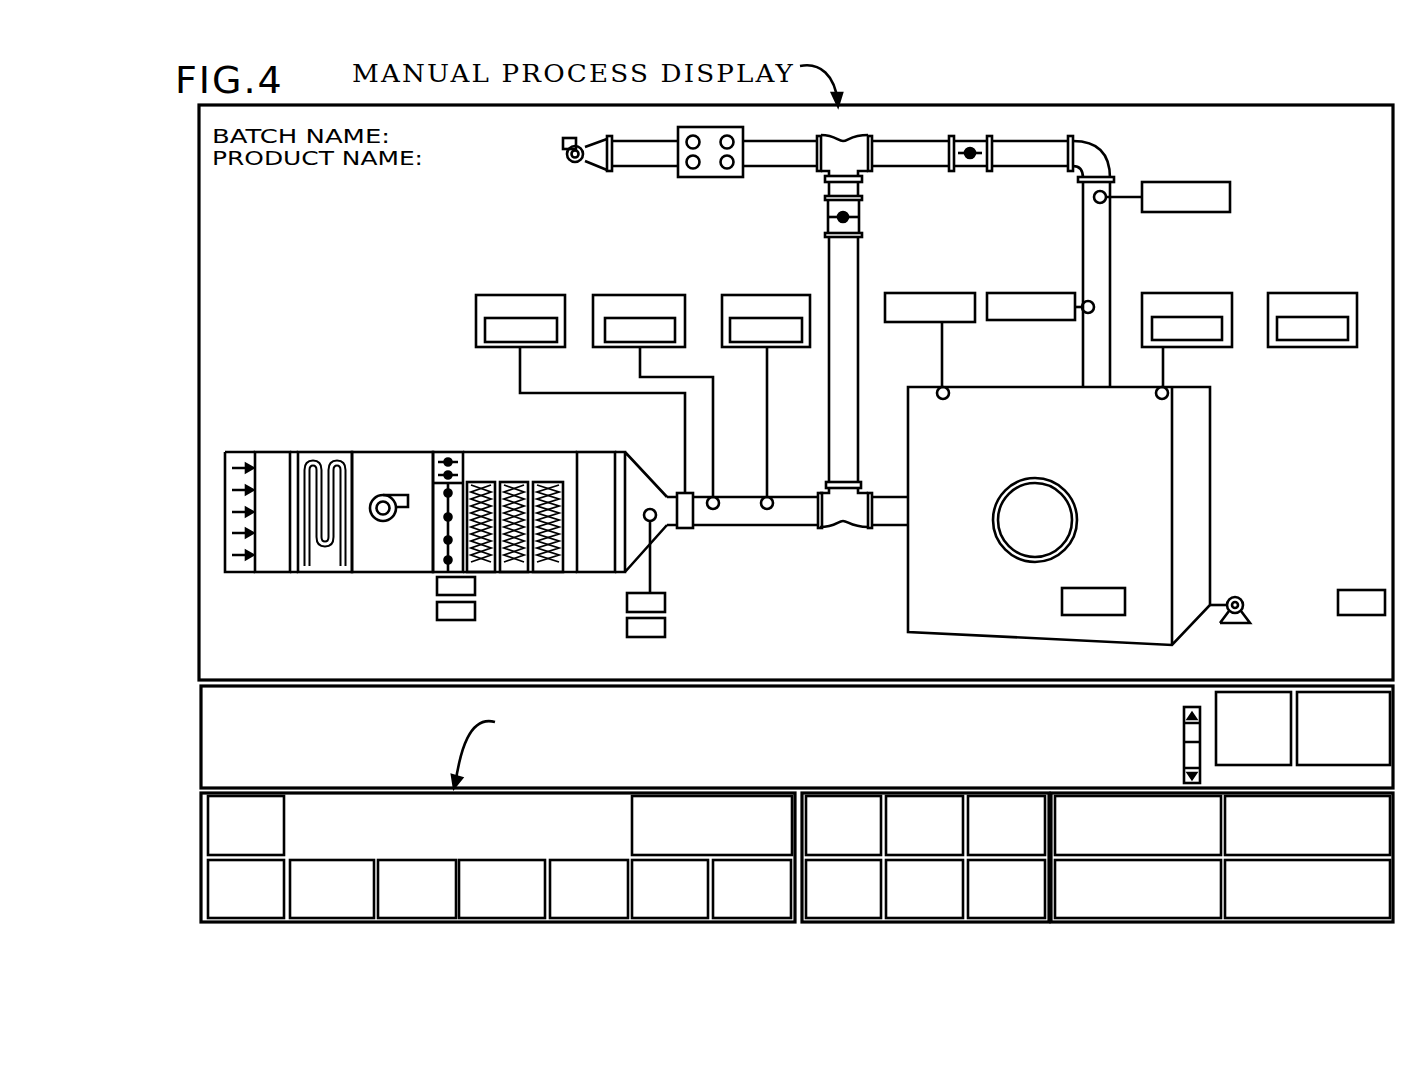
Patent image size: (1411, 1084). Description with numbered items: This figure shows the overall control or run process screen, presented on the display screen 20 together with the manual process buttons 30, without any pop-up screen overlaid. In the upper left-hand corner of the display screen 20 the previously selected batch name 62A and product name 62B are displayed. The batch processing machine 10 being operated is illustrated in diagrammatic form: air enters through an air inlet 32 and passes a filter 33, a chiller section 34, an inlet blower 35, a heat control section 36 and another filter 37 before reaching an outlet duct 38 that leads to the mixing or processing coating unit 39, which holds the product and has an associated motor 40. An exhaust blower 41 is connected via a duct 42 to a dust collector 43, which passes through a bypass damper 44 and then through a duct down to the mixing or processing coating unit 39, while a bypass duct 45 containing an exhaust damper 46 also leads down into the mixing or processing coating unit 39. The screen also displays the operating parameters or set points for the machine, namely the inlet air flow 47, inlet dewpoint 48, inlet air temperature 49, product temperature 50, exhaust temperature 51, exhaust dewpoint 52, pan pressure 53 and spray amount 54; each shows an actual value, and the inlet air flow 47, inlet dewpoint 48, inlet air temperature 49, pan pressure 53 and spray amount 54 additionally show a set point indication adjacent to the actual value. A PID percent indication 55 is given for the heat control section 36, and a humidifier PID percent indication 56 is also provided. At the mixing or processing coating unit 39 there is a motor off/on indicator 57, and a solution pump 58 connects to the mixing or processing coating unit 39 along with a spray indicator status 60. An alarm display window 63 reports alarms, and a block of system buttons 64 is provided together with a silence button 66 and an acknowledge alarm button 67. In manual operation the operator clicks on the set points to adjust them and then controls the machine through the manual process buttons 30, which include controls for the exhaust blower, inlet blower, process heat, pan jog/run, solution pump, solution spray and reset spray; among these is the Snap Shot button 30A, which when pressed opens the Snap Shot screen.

The batch processing machine 10 is at (922, 137).
The display screen 20 is at (1252, 103).
The manual process buttons 30 is at (350, 786).
The Snap Shot button 30A is at (733, 805).
The air inlet 32 is at (243, 460).
The filter 33 is at (272, 467).
The chiller section 34 is at (325, 460).
The inlet blower 35 is at (403, 486).
The heat control section 36 is at (528, 478).
The filter 37 is at (595, 467).
The outlet duct 38 is at (757, 523).
The mixing or processing coating unit 39 is at (980, 463).
The motor 40 is at (1048, 516).
The exhaust blower 41 is at (569, 159).
The duct 42 is at (655, 166).
The dust collector 43 is at (685, 172).
The bypass damper 44 is at (853, 225).
The bypass duct 45 is at (1048, 166).
The exhaust damper 46 is at (965, 157).
The inlet air flow 47 is at (493, 327).
The inlet dewpoint 48 is at (617, 327).
The inlet air temperature 49 is at (740, 327).
The product temperature 50 is at (903, 322).
The exhaust temperature 51 is at (1012, 322).
The exhaust dewpoint 52 is at (1231, 187).
The pan pressure 53 is at (1178, 338).
The spray amount 54 is at (1297, 337).
The PID percent indication 55 is at (476, 608).
The humidifier PID percent indication 56 is at (666, 625).
The motor off/on indicator 57 is at (1088, 590).
The solution pump 58 is at (1234, 598).
The spray indicator status 60 is at (1377, 590).
The batch name 62A is at (393, 131).
The product name 62B is at (428, 158).
The alarm display window 63 is at (1103, 723).
The system buttons 64 is at (977, 778).
The silence button 66 is at (1266, 713).
The acknowledge alarm button 67 is at (1343, 713).